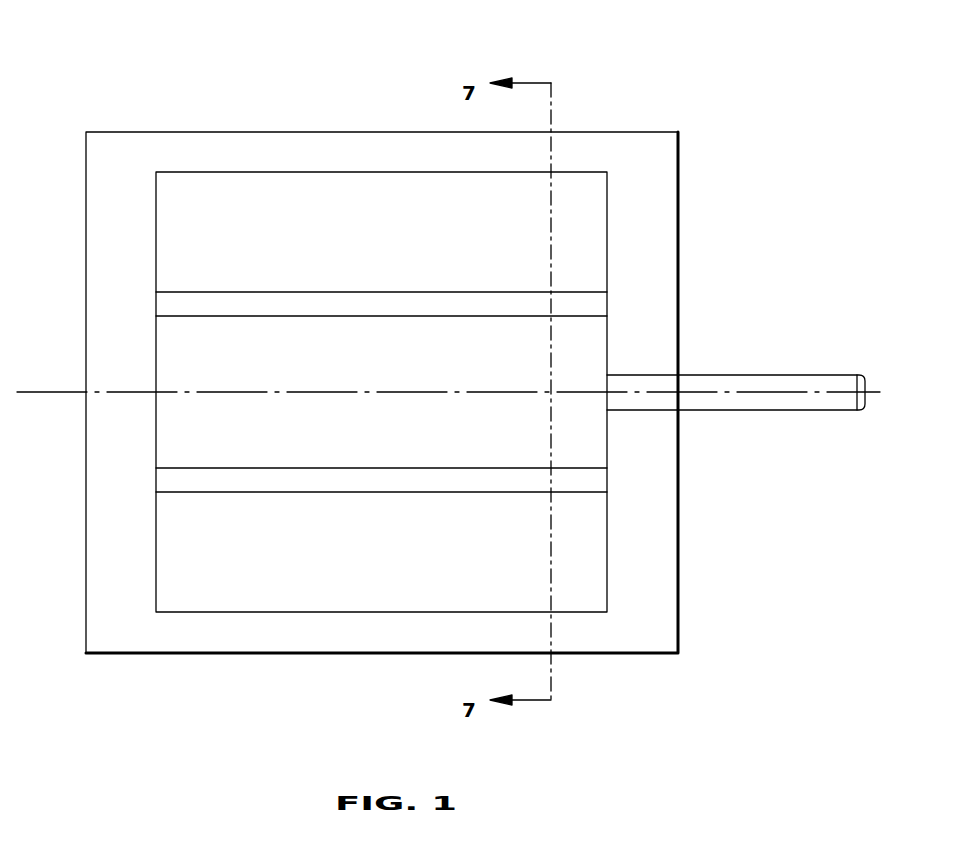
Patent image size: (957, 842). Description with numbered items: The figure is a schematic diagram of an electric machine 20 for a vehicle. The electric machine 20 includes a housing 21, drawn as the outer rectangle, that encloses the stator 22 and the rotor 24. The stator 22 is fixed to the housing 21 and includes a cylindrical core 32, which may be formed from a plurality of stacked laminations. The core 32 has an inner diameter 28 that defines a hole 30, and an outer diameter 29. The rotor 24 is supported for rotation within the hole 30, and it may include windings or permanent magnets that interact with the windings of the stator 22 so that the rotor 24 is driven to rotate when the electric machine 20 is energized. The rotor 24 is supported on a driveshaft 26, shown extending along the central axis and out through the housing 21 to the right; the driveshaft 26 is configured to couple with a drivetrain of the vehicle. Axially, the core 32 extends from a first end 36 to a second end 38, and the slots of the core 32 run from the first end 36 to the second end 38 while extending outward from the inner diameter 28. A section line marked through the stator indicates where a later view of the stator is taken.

The electric machine 20 is at (662, 83).
The housing 21 is at (383, 130).
The stator 22 is at (258, 170).
The rotor 24 is at (156, 358).
The driveshaft 26 is at (745, 372).
The inner diameter 28 is at (573, 292).
The outer diameter 29 is at (246, 612).
The hole 30 is at (628, 476).
The cylindrical core 32 is at (607, 235).
The first end 36 is at (156, 240).
The second end 38 is at (607, 548).